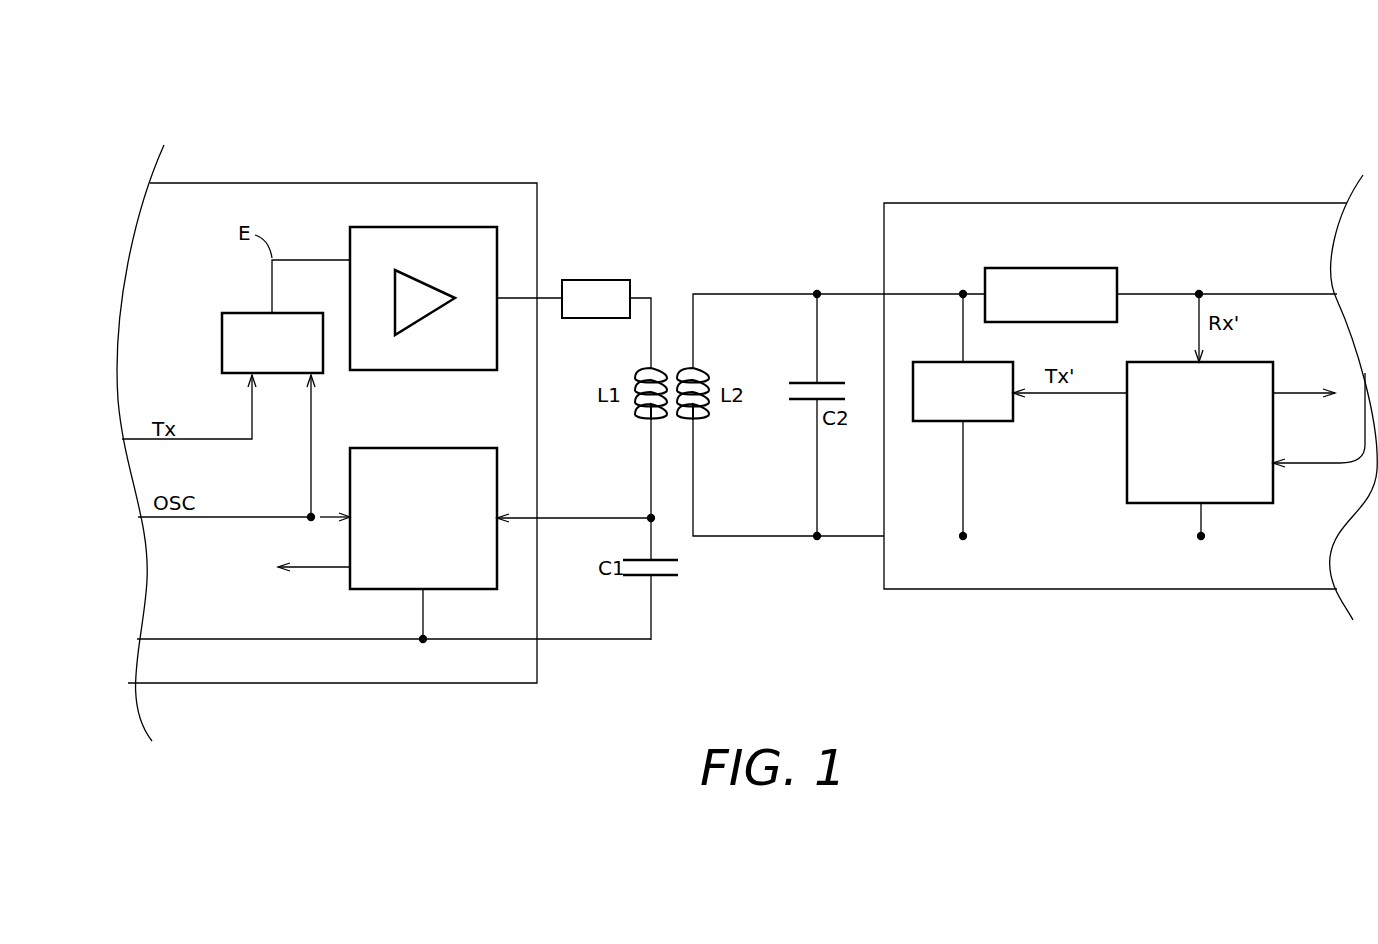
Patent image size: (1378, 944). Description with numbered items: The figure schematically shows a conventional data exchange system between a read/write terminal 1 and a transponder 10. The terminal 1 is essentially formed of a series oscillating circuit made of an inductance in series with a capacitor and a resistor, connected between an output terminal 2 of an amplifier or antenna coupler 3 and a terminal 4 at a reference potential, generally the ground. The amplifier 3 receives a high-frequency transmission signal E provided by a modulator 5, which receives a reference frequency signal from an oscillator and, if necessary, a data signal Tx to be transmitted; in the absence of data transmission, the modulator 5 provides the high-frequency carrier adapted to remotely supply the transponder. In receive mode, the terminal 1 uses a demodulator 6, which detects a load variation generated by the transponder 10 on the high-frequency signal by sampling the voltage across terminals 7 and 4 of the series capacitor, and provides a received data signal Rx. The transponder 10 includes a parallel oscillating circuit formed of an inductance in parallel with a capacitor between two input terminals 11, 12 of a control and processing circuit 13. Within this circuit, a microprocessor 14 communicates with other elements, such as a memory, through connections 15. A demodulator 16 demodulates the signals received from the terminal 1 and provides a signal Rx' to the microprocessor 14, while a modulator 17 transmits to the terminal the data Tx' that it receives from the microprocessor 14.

The read/write terminal 1 is at (399, 104).
The output terminal 2 is at (540, 298).
The amplifier or antenna coupler 3 is at (470, 370).
The terminal at a reference potential 4 is at (593, 640).
The modulator 5 is at (318, 373).
The demodulator 6 is at (470, 589).
The terminal of capacitor C1 7 is at (648, 514).
The transponder 10 is at (1211, 106).
The input terminal 11 is at (858, 290).
The input terminal 12 is at (845, 538).
The control and processing circuit 13 is at (1060, 200).
The microprocessor 14 is at (1127, 435).
The connections 15 is at (1285, 390).
The demodulator 16 is at (1087, 268).
The modulator 17 is at (948, 421).